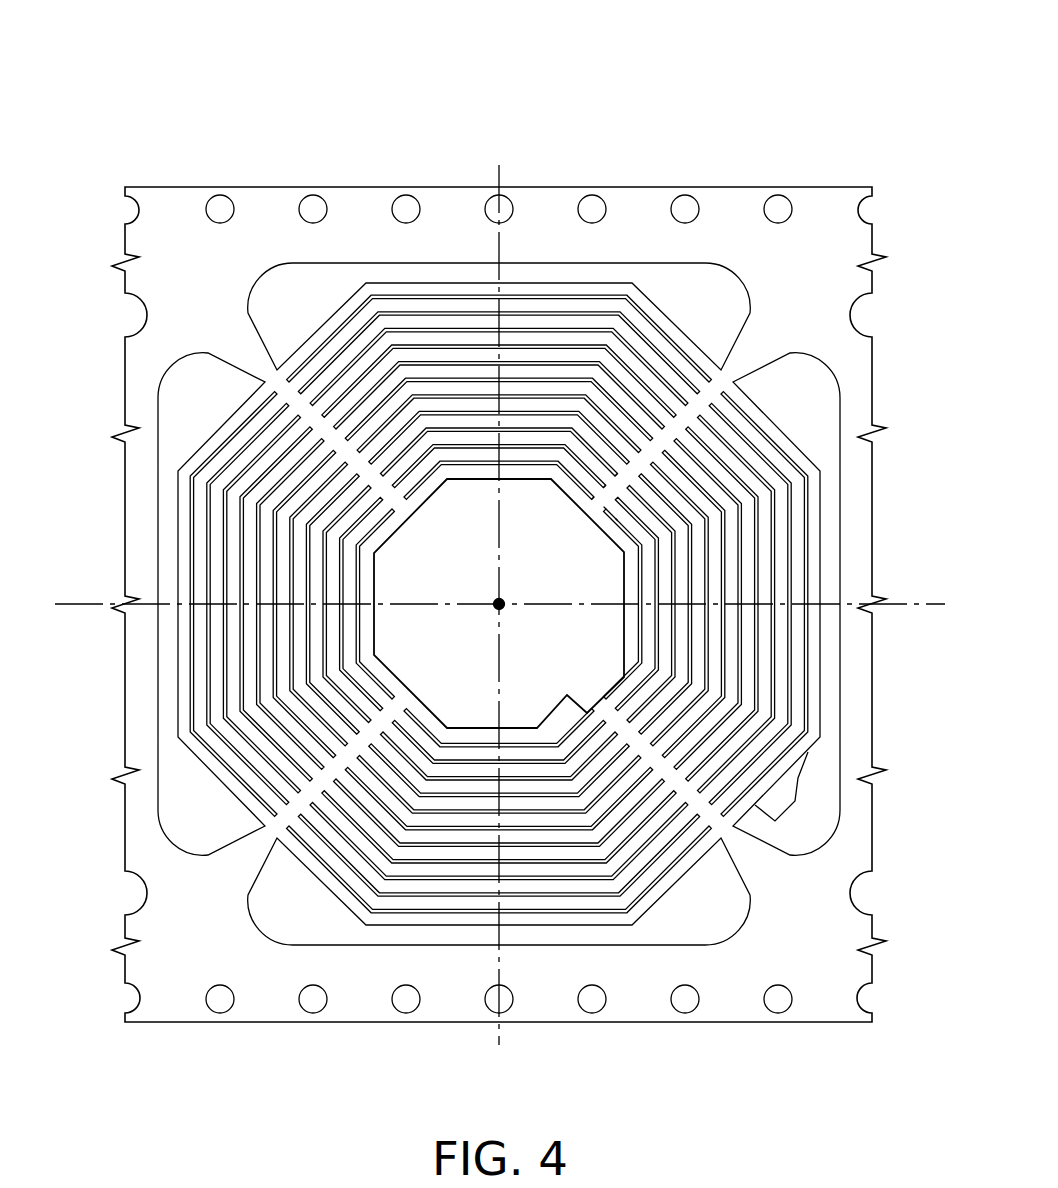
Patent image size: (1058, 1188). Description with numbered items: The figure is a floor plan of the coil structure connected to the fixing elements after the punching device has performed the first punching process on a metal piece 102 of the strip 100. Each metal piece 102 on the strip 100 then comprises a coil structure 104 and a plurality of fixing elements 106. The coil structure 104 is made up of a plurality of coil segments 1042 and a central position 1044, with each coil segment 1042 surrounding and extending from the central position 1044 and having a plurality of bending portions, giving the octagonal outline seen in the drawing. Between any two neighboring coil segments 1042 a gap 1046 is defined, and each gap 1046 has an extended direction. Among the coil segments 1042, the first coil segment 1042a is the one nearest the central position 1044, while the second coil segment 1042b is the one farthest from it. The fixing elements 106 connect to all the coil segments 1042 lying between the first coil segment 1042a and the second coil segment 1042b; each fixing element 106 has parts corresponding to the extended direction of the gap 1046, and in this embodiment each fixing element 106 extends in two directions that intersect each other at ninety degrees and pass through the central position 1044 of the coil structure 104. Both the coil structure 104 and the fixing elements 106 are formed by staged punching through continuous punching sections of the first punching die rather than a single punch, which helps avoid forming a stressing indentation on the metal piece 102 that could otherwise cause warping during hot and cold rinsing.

The strip 100 is at (720, 42).
The metal piece 102 is at (817, 180).
The coil structure 104 is at (680, 318).
The coil segment 1042 is at (449, 340).
The first coil segment 1042a is at (368, 628).
The second coil segment 1042b is at (317, 340).
The central position 1044 is at (503, 610).
The gap 1046 is at (467, 463).
The fixing element 106 is at (602, 510).